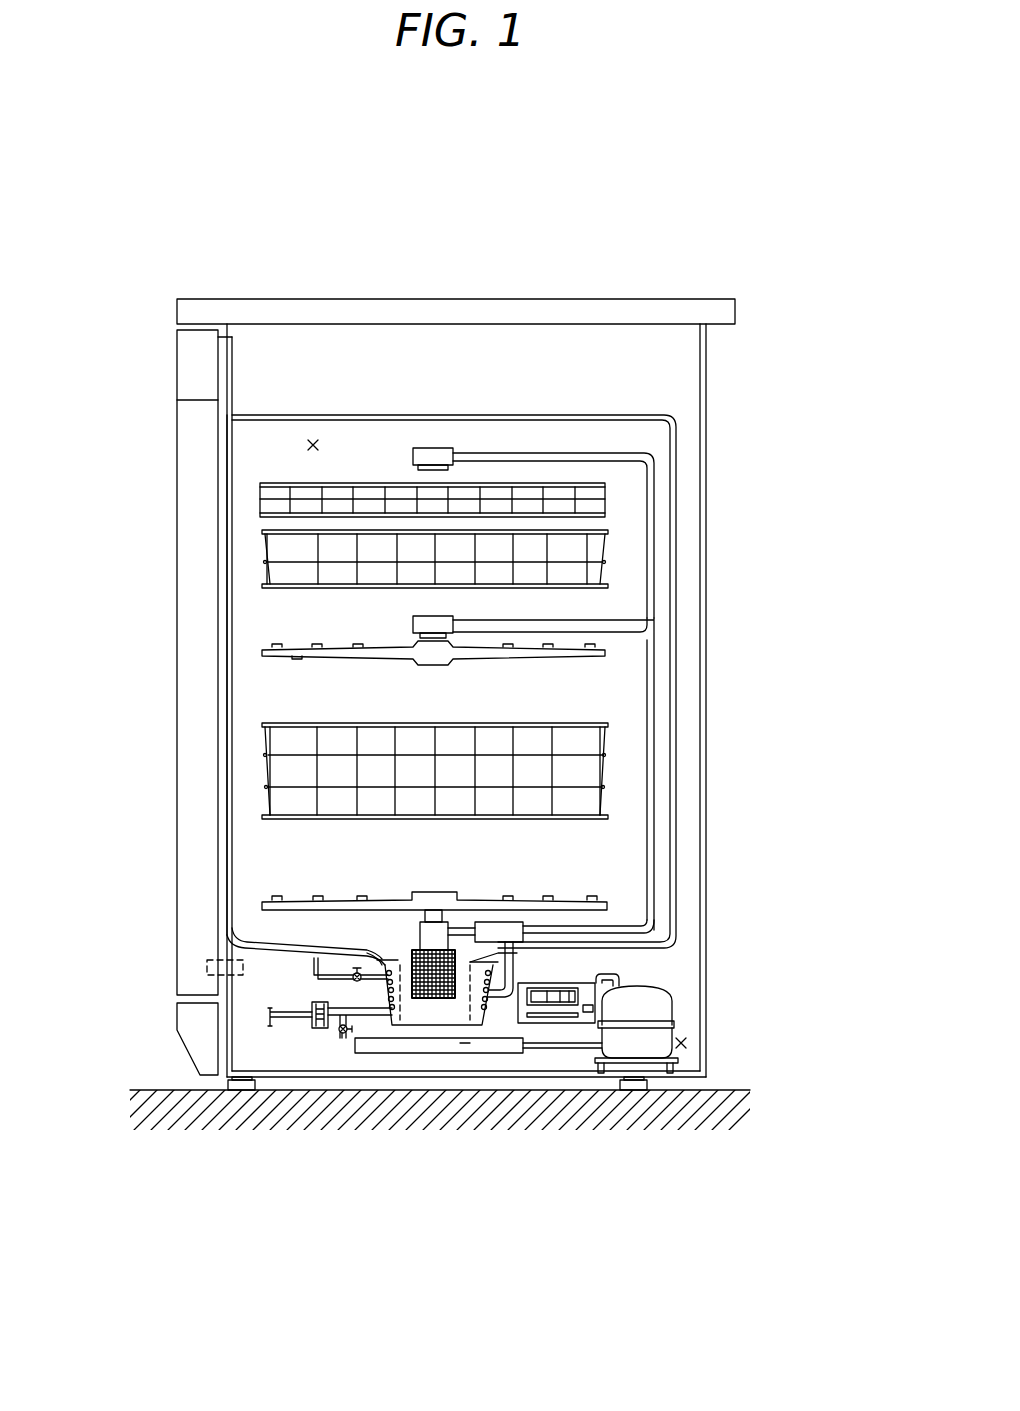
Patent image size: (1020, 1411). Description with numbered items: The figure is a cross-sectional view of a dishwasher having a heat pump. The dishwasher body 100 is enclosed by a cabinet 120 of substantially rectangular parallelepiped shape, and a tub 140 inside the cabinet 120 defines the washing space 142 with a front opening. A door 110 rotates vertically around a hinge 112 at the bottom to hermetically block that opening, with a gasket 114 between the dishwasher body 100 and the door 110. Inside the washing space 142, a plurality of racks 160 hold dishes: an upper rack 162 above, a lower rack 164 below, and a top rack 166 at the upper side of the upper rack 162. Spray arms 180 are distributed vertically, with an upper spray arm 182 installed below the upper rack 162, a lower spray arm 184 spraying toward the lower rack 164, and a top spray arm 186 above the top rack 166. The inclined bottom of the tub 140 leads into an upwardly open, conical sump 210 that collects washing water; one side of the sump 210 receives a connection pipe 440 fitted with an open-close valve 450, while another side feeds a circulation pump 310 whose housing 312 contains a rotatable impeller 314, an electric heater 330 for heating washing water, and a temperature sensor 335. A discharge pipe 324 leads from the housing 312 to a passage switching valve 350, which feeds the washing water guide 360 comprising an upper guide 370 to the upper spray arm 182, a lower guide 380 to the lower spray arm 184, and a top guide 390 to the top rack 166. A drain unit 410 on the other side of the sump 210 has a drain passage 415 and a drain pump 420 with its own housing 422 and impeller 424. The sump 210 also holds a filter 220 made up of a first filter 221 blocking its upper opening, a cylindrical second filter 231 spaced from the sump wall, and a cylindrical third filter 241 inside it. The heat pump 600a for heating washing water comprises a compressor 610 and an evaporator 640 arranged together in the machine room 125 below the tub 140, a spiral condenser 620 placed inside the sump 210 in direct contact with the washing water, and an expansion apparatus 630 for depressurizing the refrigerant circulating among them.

The dishwasher body 100 is at (436, 753).
The door 110 is at (177, 447).
The hinge 112 is at (205, 962).
The gasket 114 is at (236, 793).
The cabinet 120 is at (706, 370).
The machine room 125 is at (688, 1044).
The tub 140 is at (676, 437).
The washing space 142 is at (313, 440).
The rack 160 is at (543, 651).
The upper rack 162 is at (605, 572).
The lower rack 164 is at (518, 734).
The top rack 166 is at (610, 500).
The spray arm 180 is at (327, 685).
The upper spray arm 182 is at (262, 652).
The lower spray arm 184 is at (397, 900).
The top spray arm 186 is at (413, 456).
The sump 210 is at (489, 1001).
The filter 220 is at (279, 1005).
The first filter 221 is at (412, 952).
The second filter 231 is at (375, 957).
The third filter 241 is at (407, 940).
The circulation pump 310 is at (671, 1063).
The housing 312 is at (598, 985).
The impeller 314 is at (582, 992).
The discharge pipe 324 is at (516, 966).
The electric heater 330 is at (555, 1020).
The temperature sensor 335 is at (590, 1013).
The passage switching valve 350 is at (508, 925).
The washing water guide 360 is at (553, 561).
The upper guide 370 is at (491, 612).
The lower guide 380 is at (462, 930).
The top guide 390 is at (474, 445).
The drain unit 410 is at (306, 1142).
The drain passage 415 is at (283, 1017).
The drain pump 420 is at (330, 1121).
The housing 422 is at (310, 1023).
The impeller 424 is at (325, 1031).
The connection pipe 440 is at (314, 966).
The open-close valve 450 is at (311, 1005).
The heat pump 600a is at (505, 1151).
The compressor 610 is at (645, 1048).
The condenser 620 is at (473, 1000).
The expansion apparatus 630 is at (333, 1030).
The evaporator 640 is at (467, 1043).